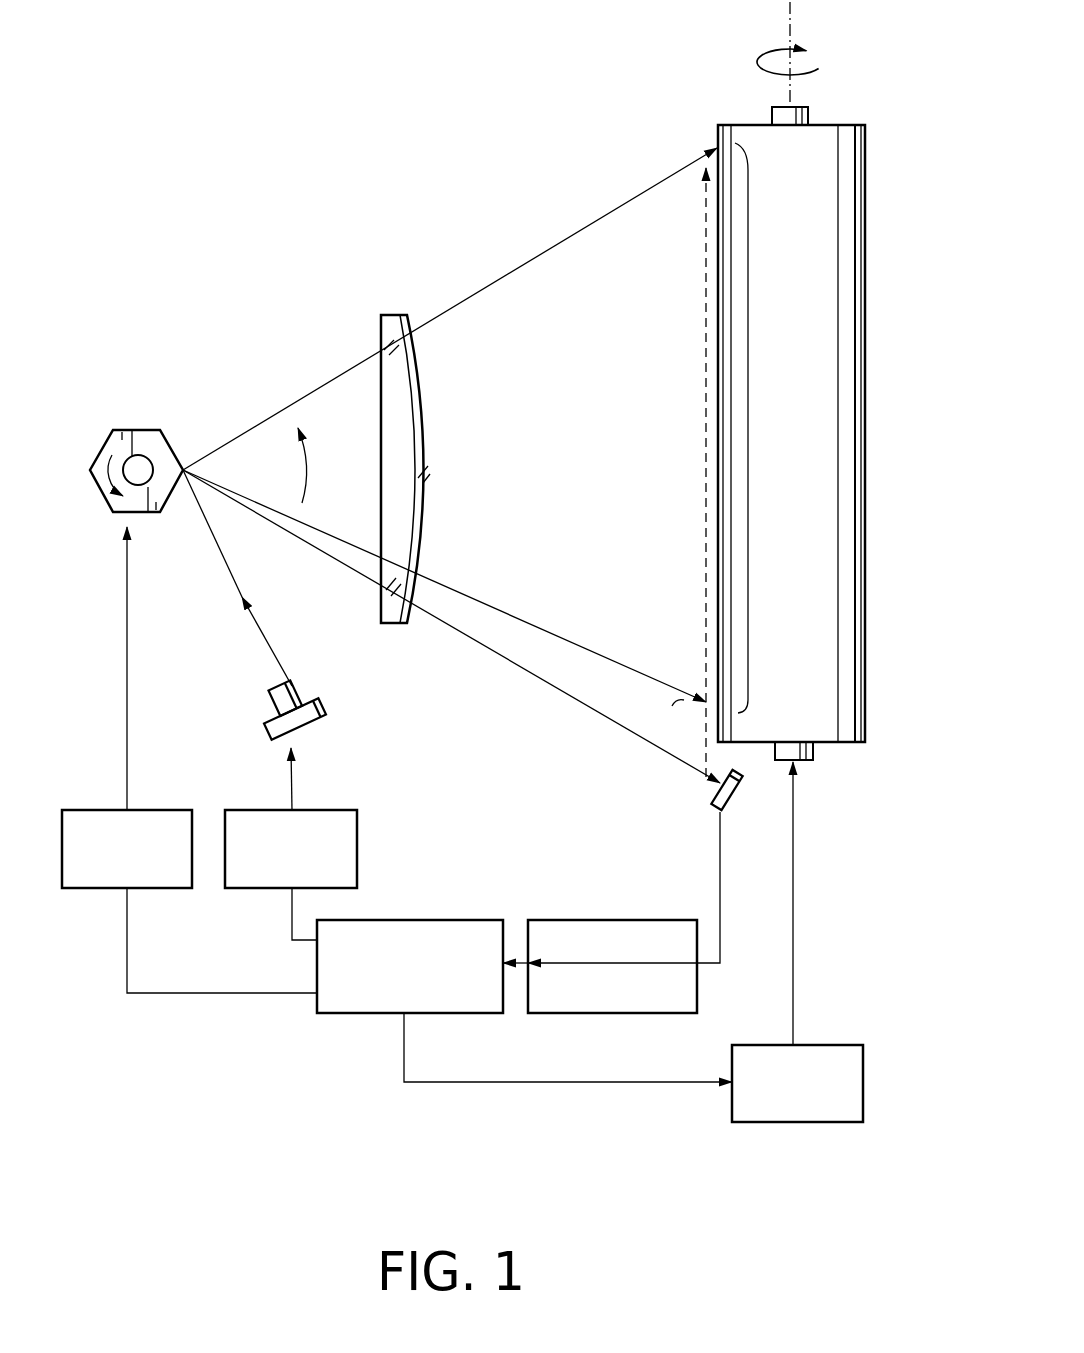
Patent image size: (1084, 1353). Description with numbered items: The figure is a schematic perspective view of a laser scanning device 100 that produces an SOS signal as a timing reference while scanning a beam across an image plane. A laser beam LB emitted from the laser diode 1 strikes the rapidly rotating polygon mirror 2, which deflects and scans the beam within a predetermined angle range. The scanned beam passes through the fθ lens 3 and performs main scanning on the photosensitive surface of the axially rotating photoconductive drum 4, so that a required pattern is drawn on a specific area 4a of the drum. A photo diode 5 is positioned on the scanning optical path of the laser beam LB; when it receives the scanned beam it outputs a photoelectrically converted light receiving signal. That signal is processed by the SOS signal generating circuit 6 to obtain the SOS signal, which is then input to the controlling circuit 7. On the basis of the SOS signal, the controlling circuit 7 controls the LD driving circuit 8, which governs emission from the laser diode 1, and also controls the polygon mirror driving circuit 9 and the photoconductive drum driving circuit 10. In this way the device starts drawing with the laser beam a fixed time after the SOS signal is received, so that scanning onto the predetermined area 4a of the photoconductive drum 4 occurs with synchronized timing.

The laser scanning device 100 is at (357, 128).
The laser diode 1 is at (328, 715).
The polygon mirror 2 is at (137, 430).
The fθ lens 3 is at (433, 404).
The photoconductive drum 4 is at (812, 381).
The specific area of the photoconductive drum 4a is at (748, 426).
The photo diode 5 is at (711, 801).
The SOS signal generating circuit 6 is at (605, 920).
The controlling circuit 7 is at (438, 920).
The LD driving circuit 8 is at (316, 810).
The polygon mirror driving circuit 9 is at (93, 810).
The photoconductive drum driving circuit 10 is at (822, 1045).
The laser beam LB is at (231, 577).